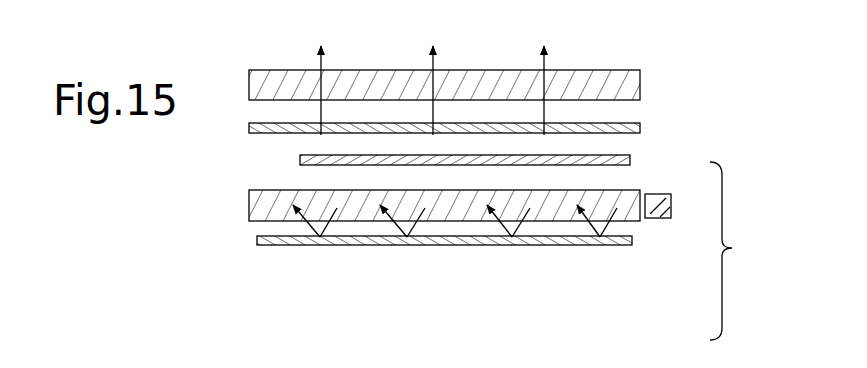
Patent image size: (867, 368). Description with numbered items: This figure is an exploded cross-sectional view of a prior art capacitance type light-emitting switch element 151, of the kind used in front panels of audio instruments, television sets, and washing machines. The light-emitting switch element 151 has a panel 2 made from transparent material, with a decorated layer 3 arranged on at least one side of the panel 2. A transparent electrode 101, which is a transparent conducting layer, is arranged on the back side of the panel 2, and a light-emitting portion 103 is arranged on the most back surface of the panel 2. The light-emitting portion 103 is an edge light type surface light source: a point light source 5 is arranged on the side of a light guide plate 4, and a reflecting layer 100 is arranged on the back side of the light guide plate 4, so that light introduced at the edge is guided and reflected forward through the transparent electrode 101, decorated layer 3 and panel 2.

The panel 2 is at (620, 77).
The decorated layer 3 is at (632, 122).
The light-emitting switch element 151 is at (468, 70).
The transparent electrode 101 is at (623, 154).
The light guide plate 4 is at (637, 190).
The reflecting layer 100 is at (467, 245).
The point light source 5 is at (665, 212).
The light-emitting portion 103 is at (742, 251).